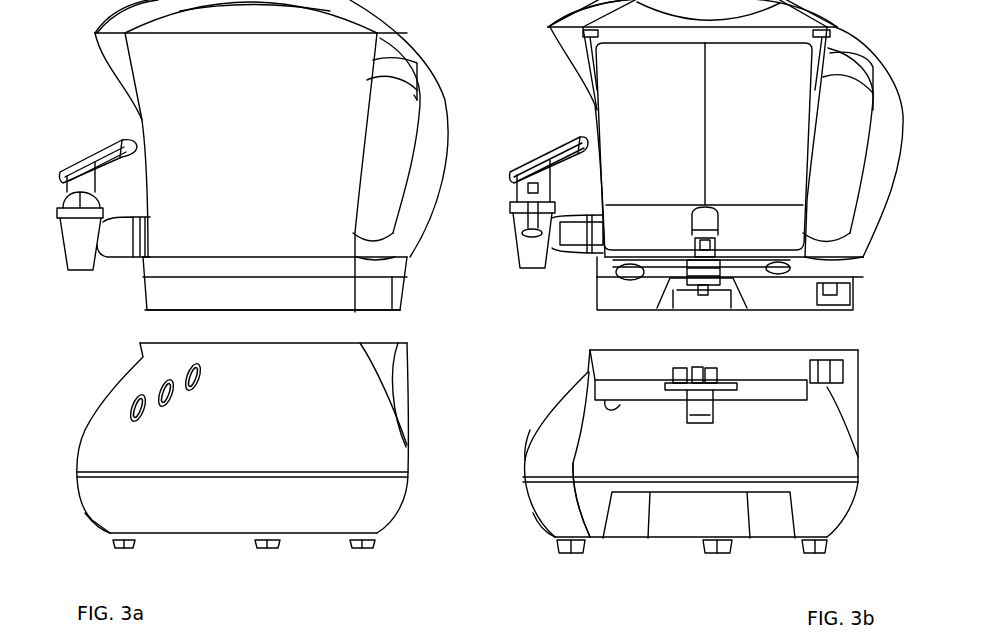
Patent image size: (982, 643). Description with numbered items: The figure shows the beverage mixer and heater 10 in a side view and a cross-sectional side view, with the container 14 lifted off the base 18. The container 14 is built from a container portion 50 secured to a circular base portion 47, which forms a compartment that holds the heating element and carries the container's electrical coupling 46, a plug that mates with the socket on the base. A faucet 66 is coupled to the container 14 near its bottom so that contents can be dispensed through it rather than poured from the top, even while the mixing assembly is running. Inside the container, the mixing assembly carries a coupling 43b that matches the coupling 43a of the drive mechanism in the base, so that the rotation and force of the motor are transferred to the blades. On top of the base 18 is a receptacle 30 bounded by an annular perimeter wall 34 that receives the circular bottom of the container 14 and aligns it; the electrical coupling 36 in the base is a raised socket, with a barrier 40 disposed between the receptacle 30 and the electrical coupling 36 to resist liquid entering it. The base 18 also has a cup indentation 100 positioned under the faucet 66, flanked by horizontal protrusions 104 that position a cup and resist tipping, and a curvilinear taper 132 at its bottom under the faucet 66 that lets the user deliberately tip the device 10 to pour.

In FIG. 3a, the beverage mixer and heater 10 is at (229, 587).
In FIG. 3b, the beverage mixer and heater 10 is at (629, 588).
In FIG. 3a, the container 14 is at (270, 118).
In FIG. 3b, the container 14 is at (712, 132).
In FIG. 3a, the base 18 is at (343, 447).
In FIG. 3b, the base 18 is at (823, 468).
In FIG. 3b, the receptacle 30 is at (633, 357).
In FIG. 3b, the perimeter wall 34 is at (587, 353).
In FIG. 3b, the electrical coupling 36 is at (848, 372).
In FIG. 3b, the barrier 40 is at (827, 388).
In FIG. 3b, the coupling 43a is at (723, 372).
In FIG. 3b, the coupling 43b is at (677, 307).
In FIG. 3b, the electrical coupling 46 is at (842, 297).
In FIG. 3a, the base portion 47 is at (377, 313).
In FIG. 3a, the container portion 50 is at (137, 107).
In FIG. 3b, the container portion 50 is at (593, 107).
In FIG. 3a, the faucet 66 is at (53, 240).
In FIG. 3b, the faucet 66 is at (507, 232).
In FIG. 3b, the cup indentation 100 is at (573, 463).
In FIG. 3a, the protrusions 104 is at (80, 443).
In FIG. 3b, the protrusions 104 is at (527, 452).
In FIG. 3a, the taper 132 is at (83, 513).
In FIG. 3b, the taper 132 is at (532, 517).